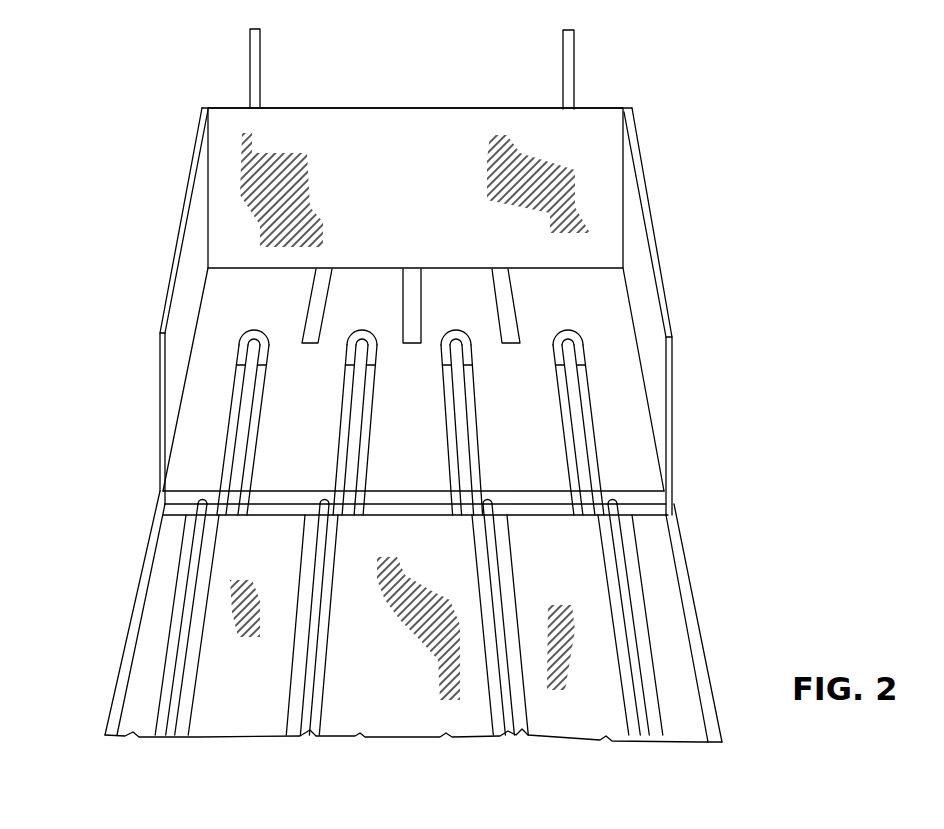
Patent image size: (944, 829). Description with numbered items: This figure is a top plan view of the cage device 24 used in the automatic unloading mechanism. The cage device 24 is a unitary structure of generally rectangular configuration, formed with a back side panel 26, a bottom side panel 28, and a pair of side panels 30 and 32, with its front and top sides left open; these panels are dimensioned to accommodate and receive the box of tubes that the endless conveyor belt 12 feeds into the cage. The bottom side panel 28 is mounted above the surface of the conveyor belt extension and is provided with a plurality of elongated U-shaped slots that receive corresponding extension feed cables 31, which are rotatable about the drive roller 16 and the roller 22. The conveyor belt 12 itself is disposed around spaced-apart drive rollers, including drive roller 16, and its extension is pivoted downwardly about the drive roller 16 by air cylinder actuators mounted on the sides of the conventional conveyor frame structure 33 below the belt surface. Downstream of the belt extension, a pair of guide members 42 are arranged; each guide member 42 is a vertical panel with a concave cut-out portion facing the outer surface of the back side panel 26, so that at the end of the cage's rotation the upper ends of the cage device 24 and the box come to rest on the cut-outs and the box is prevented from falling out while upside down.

The endless conveyor belt 12 is at (417, 676).
The drive roller 16 is at (650, 512).
The roller 22 is at (262, 355).
The cage device 24 is at (702, 140).
The back side panel 26 is at (403, 166).
The bottom side panel 28 is at (540, 431).
The side panel 30 is at (178, 238).
The extension feed cable 31 is at (247, 437).
The side panel 32 is at (658, 246).
The conveyor frame structure 33 is at (123, 633).
The guide member 42 is at (261, 60).